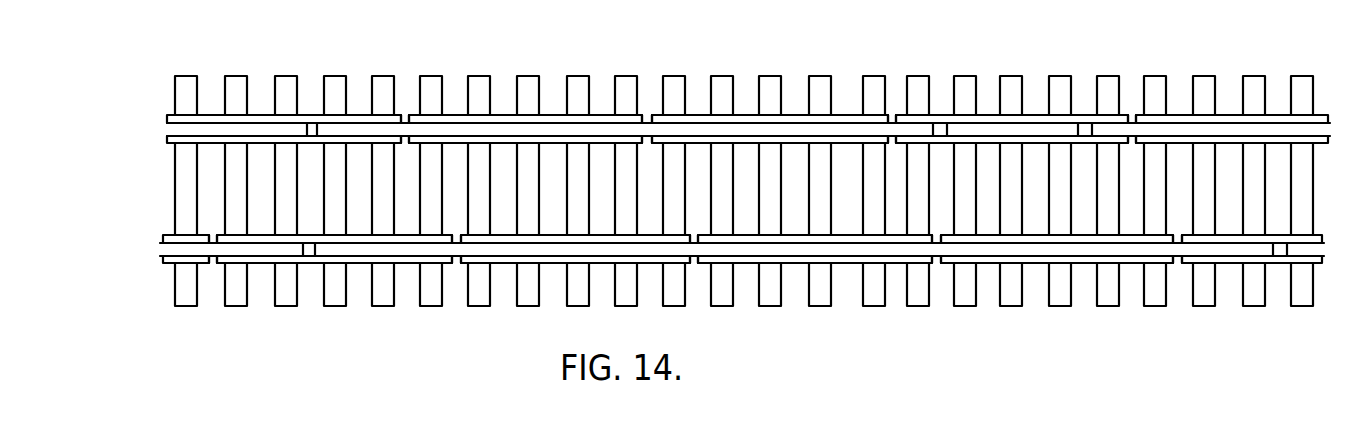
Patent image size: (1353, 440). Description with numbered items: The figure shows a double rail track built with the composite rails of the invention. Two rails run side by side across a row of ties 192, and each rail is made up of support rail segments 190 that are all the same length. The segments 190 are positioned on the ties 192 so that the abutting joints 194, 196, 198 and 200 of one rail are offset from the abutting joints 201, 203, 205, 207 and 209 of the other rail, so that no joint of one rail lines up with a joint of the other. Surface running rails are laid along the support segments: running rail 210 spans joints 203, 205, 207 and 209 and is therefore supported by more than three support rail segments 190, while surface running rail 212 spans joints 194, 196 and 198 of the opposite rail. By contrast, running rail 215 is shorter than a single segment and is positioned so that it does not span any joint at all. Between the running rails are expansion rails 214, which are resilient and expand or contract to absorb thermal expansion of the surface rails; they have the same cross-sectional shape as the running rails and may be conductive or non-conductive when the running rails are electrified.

The support rail segments 190 is at (336, 113).
The ties 192 is at (178, 88).
The abutting joint 194 is at (407, 113).
The abutting joint 196 is at (648, 112).
The abutting joint 198 is at (893, 112).
The abutting joint 200 is at (1130, 112).
The abutting joint 201 is at (212, 264).
The abutting joint 203 is at (455, 265).
The abutting joint 205 is at (691, 265).
The abutting joint 207 is at (936, 265).
The abutting joint 209 is at (1179, 265).
The running rail 210 is at (1081, 250).
The surface running rail 212 is at (697, 112).
The expansion rails 214 is at (309, 124).
The running rail 215 is at (991, 132).